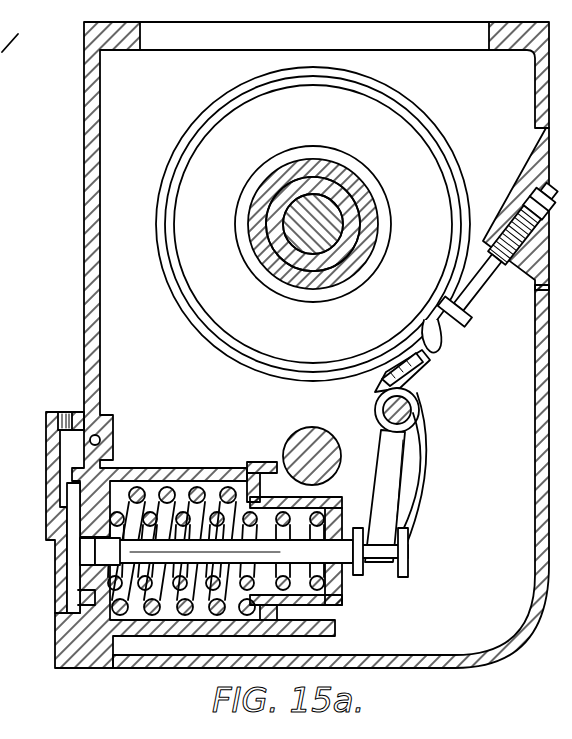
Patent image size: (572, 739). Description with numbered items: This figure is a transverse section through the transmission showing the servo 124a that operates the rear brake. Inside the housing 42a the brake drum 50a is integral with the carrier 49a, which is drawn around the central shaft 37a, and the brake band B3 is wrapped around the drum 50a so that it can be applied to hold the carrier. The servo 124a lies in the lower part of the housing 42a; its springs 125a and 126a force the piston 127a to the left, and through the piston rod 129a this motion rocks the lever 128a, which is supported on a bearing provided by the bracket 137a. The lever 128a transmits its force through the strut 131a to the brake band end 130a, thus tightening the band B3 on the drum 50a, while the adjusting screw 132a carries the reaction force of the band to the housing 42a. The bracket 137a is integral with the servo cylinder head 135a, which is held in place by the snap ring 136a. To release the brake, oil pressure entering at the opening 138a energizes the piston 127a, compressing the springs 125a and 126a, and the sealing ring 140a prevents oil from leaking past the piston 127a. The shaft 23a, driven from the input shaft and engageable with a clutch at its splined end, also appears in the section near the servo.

The housing 42a is at (84, 50).
The brake band B3 is at (418, 109).
The brake drum 50a is at (443, 150).
The carrier 49a is at (392, 208).
The shaft 37a is at (283, 216).
The adjusting screw 132a is at (490, 292).
The brake band end 130a is at (437, 355).
The strut 131a is at (423, 377).
The bracket 137a is at (431, 458).
The lever 128a is at (424, 497).
The piston rod 129a is at (410, 560).
The servo cylinder head 135a is at (333, 595).
The snap ring 136a is at (262, 618).
The shaft 23a is at (306, 430).
The opening 138a is at (100, 440).
The servo 124a is at (254, 462).
The spring 125a is at (141, 490).
The spring 126a is at (187, 490).
The piston 127a is at (81, 597).
The sealing ring 140a is at (75, 612).